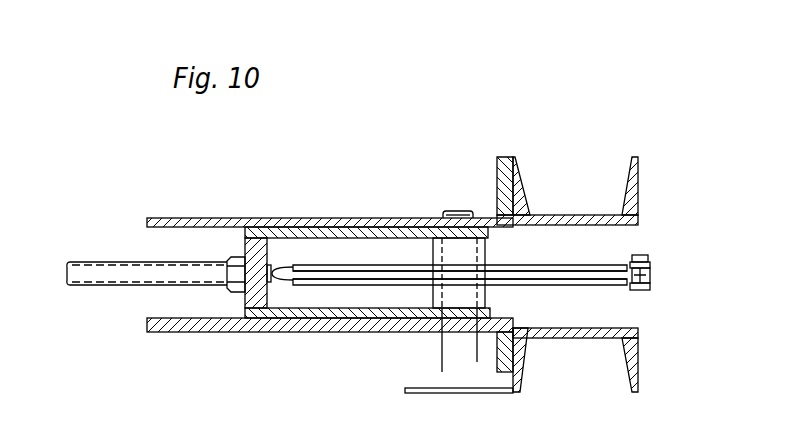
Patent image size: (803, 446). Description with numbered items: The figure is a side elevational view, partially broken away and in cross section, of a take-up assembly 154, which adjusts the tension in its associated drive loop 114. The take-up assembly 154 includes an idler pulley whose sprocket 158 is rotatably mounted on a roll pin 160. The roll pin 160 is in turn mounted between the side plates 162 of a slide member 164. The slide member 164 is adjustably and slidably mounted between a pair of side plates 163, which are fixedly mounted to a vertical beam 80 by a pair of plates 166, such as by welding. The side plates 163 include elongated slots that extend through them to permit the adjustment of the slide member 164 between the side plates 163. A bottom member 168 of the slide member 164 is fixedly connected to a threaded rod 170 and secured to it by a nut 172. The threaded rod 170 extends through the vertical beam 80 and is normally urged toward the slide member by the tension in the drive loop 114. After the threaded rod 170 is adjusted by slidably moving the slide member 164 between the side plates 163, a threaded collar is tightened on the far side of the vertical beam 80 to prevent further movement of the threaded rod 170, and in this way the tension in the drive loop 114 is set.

The vertical beam 80 is at (613, 212).
The drive loop 114 is at (645, 255).
The take-up assembly 154 is at (317, 198).
The sprocket 158 is at (418, 266).
The roll pin 160 is at (447, 347).
The side plates of slide member 162 is at (338, 309).
The side plates 163 is at (393, 309).
The slide member 164 is at (240, 237).
The plates 166 is at (517, 327).
The bottom member 168 is at (257, 298).
The threaded rod 170 is at (107, 260).
The nut 172 is at (228, 257).